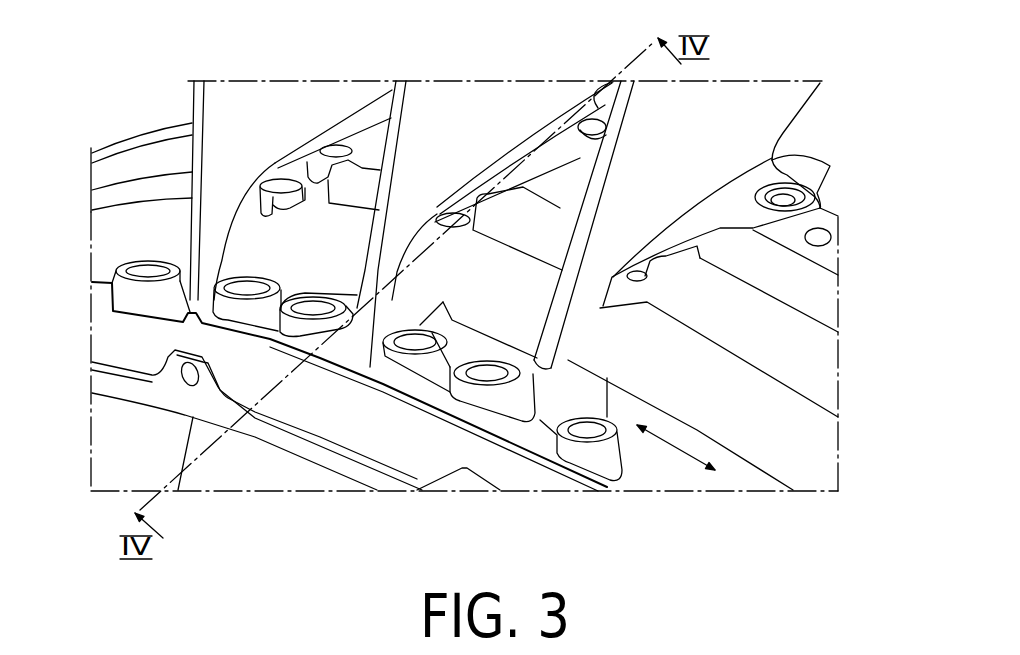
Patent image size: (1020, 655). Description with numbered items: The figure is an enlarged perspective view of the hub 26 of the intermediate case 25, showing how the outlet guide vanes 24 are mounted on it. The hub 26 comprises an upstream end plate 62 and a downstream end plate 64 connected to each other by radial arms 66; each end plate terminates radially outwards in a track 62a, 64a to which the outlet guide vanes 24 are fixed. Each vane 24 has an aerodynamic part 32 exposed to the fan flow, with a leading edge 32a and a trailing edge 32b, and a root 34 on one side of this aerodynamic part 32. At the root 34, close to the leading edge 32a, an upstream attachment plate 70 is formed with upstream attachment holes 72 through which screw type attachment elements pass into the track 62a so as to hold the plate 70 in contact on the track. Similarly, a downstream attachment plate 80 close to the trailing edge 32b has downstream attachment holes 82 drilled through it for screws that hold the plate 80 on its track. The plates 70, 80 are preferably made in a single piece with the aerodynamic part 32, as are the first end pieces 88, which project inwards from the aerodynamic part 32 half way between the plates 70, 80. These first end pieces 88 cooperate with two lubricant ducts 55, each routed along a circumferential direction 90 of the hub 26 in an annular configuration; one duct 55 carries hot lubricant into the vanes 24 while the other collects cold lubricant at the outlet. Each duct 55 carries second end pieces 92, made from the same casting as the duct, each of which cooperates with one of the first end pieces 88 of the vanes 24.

The outlet guide vane 24 is at (307, 92).
The intermediate case 25 is at (845, 470).
The hub 26 is at (455, 493).
The aerodynamic part 32 is at (213, 143).
The leading edge 32a is at (197, 105).
The trailing edge 32b is at (593, 88).
The root 34 is at (123, 298).
The lubricant duct 55 is at (805, 347).
The upstream end plate 62 is at (546, 470).
The track 62a is at (640, 478).
The downstream end plate 64 is at (828, 283).
The track 64a is at (841, 236).
The radial arm 66 is at (408, 260).
The upstream attachment plate 70 is at (113, 273).
The upstream attachment hole 72 is at (470, 408).
The downstream attachment plate 80 is at (768, 173).
The downstream attachment hole 82 is at (802, 193).
The first end piece 88 is at (279, 176).
The circumferential direction 90 is at (690, 472).
The second end piece 92 is at (333, 170).